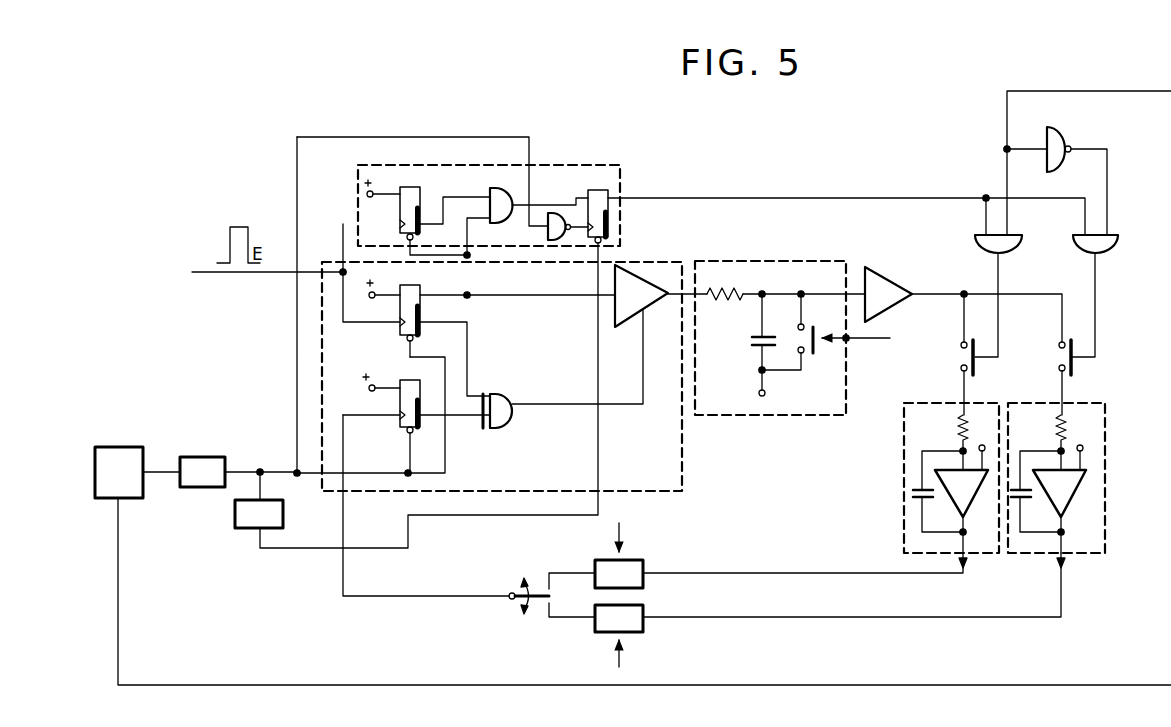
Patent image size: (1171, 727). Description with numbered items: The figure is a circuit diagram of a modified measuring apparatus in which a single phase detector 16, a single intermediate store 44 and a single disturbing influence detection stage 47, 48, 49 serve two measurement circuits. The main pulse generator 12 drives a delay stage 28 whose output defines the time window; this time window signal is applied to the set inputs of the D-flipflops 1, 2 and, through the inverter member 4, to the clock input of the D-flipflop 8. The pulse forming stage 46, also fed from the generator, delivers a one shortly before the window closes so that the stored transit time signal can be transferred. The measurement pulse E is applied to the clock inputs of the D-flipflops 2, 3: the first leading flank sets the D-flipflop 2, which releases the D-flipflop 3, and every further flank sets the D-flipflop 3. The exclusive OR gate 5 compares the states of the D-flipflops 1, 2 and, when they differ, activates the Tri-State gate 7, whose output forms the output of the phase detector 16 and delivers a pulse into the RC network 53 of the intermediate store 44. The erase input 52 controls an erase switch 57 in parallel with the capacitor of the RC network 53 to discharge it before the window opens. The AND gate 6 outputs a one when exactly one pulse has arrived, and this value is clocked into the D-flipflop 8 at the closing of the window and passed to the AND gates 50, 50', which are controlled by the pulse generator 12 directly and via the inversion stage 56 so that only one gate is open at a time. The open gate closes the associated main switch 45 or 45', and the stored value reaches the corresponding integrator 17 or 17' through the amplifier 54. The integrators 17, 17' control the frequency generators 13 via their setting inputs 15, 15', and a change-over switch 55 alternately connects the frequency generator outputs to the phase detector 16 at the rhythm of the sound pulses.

The D-flipflop 1 is at (416, 423).
The D-flipflop 2 is at (491, 338).
The D-flipflop 3 is at (427, 217).
The inverter member 4 is at (568, 226).
The exclusive OR gate 5 is at (563, 368).
The AND gate 6 is at (539, 205).
The Tri-State gate 7 is at (668, 300).
The D-flipflop 8 is at (598, 216).
The main pulse generator 12 is at (120, 447).
The frequency generator 13 is at (595, 560).
The setting input 15 is at (648, 538).
The setting input 15' is at (650, 652).
The phase detector 16 is at (540, 393).
The integrator 17 is at (923, 485).
The integrator 17' is at (1083, 485).
The delay stage 28 is at (200, 487).
The intermediate store 44 is at (795, 321).
The main switch 45 is at (994, 365).
The main switch 45' is at (1095, 365).
The pulse forming stage 46 is at (248, 528).
The disturbing influence detection stage 47 is at (489, 187).
The disturbing influence detection stage 48 is at (566, 180).
The disturbing influence detection stage 49 is at (627, 181).
The AND gate 50 is at (1017, 258).
The AND gate 50' is at (1118, 258).
The erase input 52 is at (848, 340).
The RC network 53 is at (748, 355).
The amplifier 54 is at (886, 280).
The change-over switch 55 is at (537, 604).
The inversion stage 56 is at (1057, 128).
The erase switch 57 is at (808, 328).